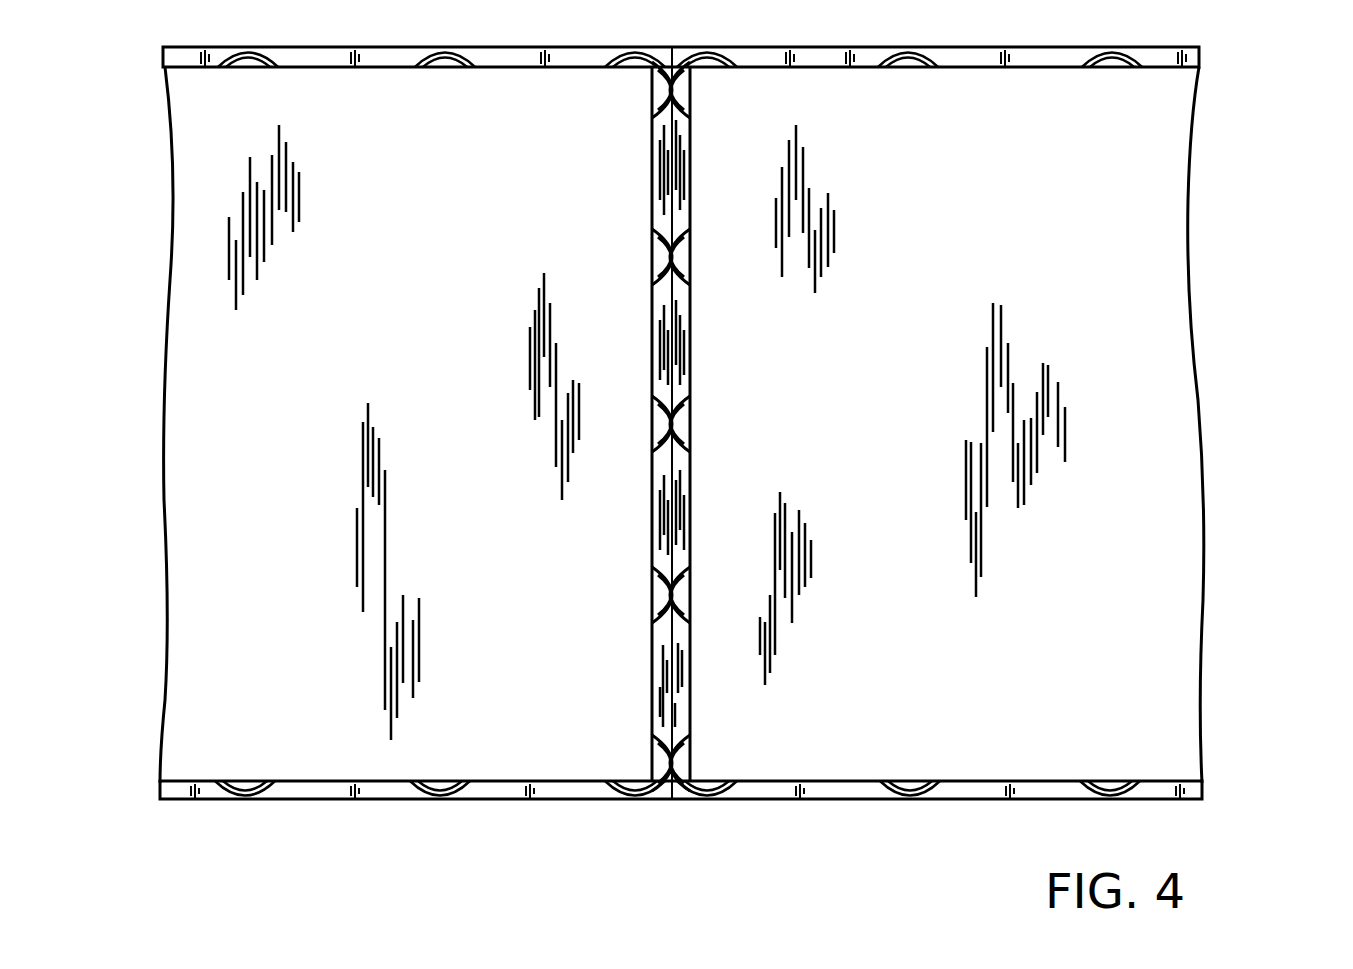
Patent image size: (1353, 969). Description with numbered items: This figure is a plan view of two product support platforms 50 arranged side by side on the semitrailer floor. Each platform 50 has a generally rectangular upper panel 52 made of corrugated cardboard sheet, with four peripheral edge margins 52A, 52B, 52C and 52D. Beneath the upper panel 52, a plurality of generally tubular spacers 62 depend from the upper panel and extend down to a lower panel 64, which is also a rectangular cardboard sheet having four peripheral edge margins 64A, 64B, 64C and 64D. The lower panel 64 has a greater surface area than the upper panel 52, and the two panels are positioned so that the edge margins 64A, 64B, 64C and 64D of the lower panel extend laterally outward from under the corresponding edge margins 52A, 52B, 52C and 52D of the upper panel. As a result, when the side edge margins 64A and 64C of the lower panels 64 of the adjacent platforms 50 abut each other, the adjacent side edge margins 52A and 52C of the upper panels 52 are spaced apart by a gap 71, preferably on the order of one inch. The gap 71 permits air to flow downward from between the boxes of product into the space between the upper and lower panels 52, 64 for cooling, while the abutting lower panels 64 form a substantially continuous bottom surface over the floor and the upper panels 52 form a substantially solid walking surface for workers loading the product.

The product support platform 50 is at (150, 128).
The upper panel 52 is at (205, 192).
The peripheral edge margin of upper panel 52A is at (658, 300).
The peripheral edge margin of upper panel 52B is at (520, 800).
The peripheral edge margin of upper panel 52C is at (683, 463).
The peripheral edge margin of upper panel 52D is at (343, 67).
The tubular spacer 62 is at (955, 67).
The lower panel 64 is at (527, 67).
The side edge margin of lower panel 64A is at (668, 378).
The peripheral edge margin of lower panel 64B is at (340, 800).
The side edge margin of lower panel 64C is at (672, 560).
The peripheral edge margin of lower panel 64D is at (392, 67).
The gap 71 is at (680, 118).